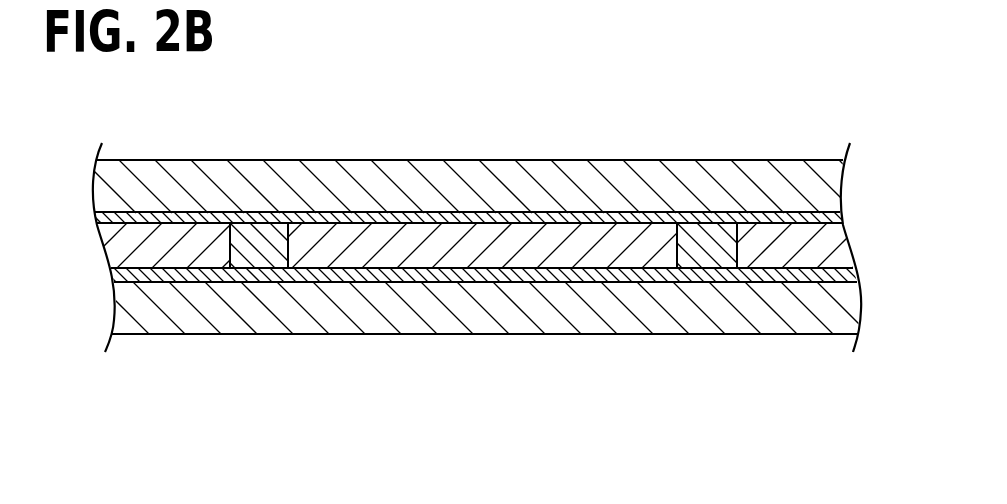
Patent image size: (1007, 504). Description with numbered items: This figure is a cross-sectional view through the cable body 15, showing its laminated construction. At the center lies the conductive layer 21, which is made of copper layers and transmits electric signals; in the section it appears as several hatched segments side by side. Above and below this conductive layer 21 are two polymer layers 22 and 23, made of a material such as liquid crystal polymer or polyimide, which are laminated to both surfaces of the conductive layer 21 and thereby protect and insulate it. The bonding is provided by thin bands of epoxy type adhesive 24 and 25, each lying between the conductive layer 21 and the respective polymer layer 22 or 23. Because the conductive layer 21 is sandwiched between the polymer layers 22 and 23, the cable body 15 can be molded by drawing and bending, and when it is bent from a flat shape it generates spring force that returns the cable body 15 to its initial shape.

The cable body 15 is at (862, 153).
The conductive layer 21 is at (165, 250).
The polymer layer 22 is at (448, 177).
The polymer layer 23 is at (450, 320).
The epoxy type adhesive 24 is at (573, 217).
The epoxy type adhesive 25 is at (575, 273).